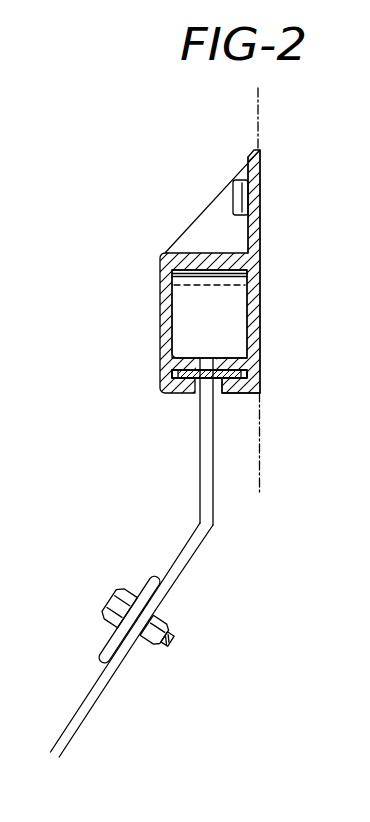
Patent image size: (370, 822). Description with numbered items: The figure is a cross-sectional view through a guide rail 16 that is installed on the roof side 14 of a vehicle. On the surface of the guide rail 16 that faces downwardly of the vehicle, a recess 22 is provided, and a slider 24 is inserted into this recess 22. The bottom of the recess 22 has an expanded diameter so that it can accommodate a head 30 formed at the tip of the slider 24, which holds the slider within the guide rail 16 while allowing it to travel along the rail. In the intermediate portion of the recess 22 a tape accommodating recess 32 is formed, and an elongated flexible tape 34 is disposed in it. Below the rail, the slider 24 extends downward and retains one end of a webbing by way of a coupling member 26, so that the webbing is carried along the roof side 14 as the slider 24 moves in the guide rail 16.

The roof side 14 is at (256, 137).
The guide rail 16 is at (158, 267).
The recess 22 is at (201, 404).
The slider 24 is at (203, 545).
The coupling member 26 is at (105, 690).
The head 30 is at (233, 331).
The tape accommodating recess 32 is at (187, 368).
The flexible tape 34 is at (233, 393).